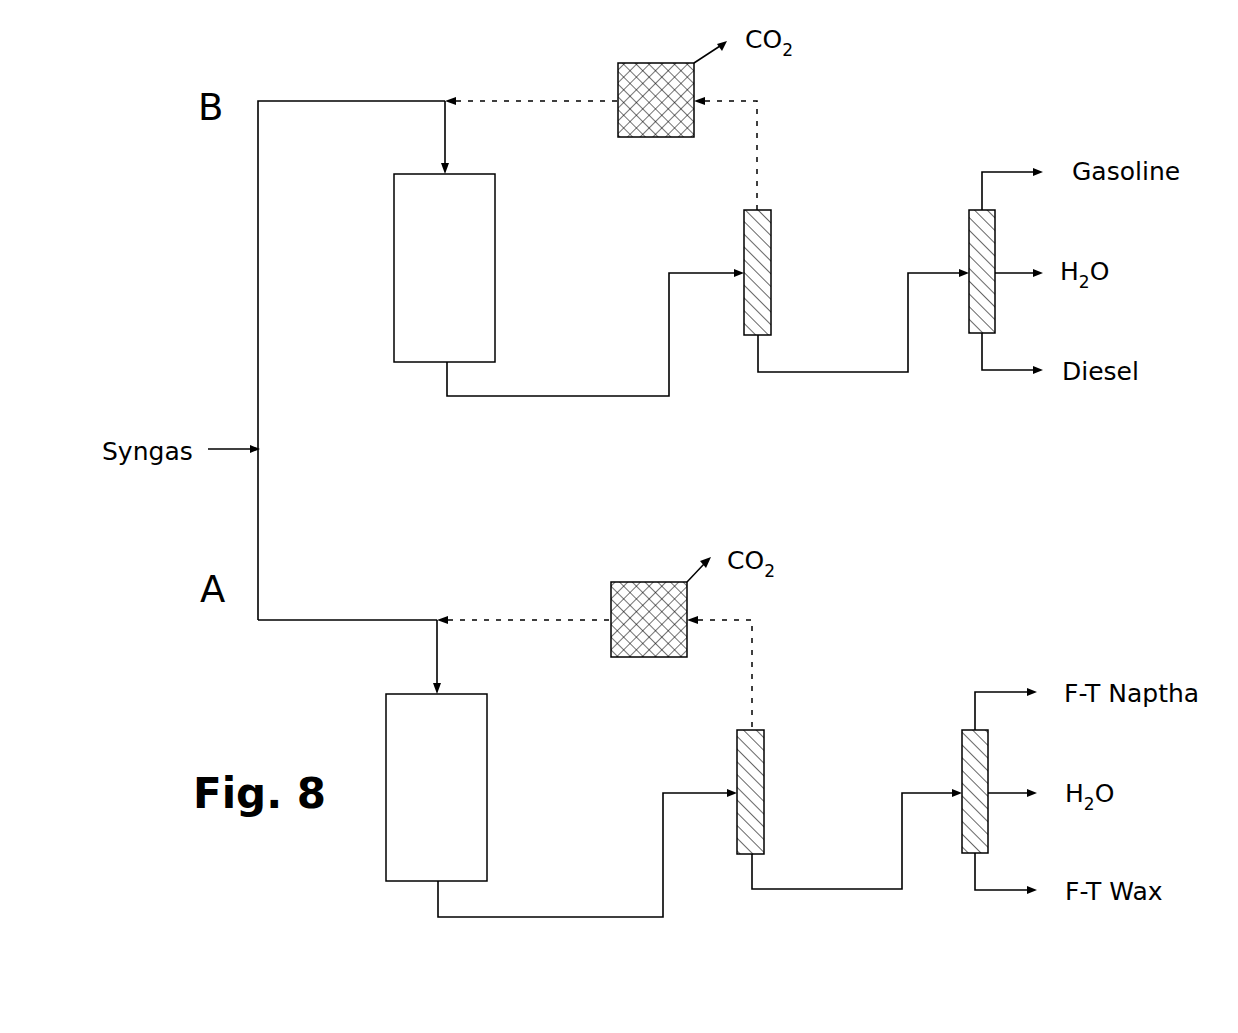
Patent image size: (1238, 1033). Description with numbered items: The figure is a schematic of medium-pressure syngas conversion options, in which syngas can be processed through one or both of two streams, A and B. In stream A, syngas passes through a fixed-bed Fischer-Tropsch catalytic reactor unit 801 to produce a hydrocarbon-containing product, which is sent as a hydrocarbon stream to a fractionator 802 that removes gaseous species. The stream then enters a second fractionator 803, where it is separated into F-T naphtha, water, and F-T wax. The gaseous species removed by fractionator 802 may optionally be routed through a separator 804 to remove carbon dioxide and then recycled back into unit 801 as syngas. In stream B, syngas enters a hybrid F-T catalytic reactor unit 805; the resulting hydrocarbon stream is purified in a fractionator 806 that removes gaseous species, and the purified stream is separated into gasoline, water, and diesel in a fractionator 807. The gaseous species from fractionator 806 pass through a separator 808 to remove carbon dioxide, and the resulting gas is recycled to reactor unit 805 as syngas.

The fixed-bed Fischer-Tropsch catalytic reactor unit 801 is at (436, 787).
The fractionator 802 is at (764, 753).
The fractionator 803 is at (962, 765).
The separator 804 is at (611, 592).
The hybrid F-T catalytic reactor unit 805 is at (444, 268).
The fractionator 806 is at (771, 233).
The fractionator 807 is at (968, 248).
The separator 808 is at (630, 138).